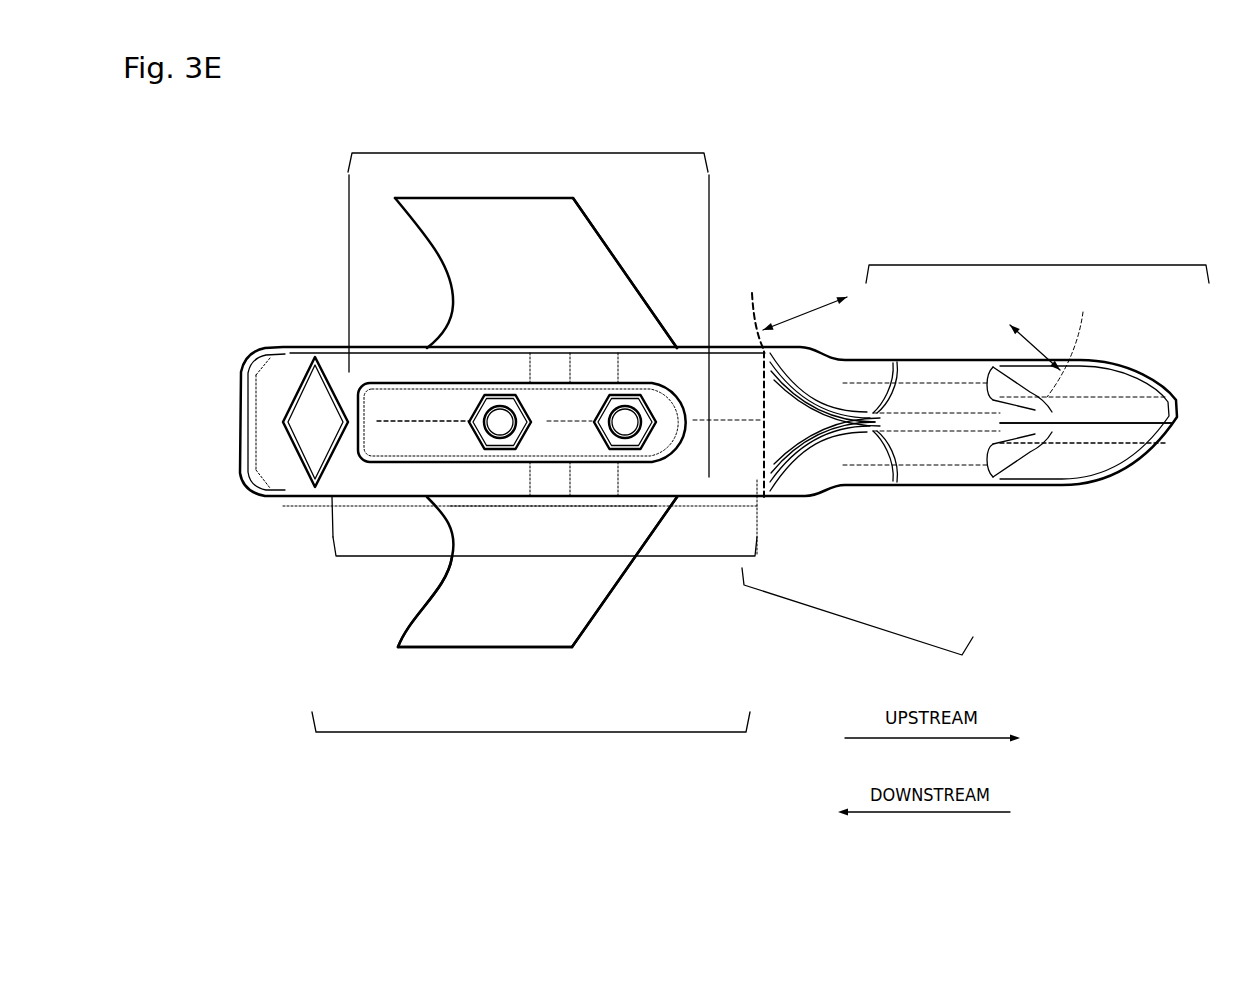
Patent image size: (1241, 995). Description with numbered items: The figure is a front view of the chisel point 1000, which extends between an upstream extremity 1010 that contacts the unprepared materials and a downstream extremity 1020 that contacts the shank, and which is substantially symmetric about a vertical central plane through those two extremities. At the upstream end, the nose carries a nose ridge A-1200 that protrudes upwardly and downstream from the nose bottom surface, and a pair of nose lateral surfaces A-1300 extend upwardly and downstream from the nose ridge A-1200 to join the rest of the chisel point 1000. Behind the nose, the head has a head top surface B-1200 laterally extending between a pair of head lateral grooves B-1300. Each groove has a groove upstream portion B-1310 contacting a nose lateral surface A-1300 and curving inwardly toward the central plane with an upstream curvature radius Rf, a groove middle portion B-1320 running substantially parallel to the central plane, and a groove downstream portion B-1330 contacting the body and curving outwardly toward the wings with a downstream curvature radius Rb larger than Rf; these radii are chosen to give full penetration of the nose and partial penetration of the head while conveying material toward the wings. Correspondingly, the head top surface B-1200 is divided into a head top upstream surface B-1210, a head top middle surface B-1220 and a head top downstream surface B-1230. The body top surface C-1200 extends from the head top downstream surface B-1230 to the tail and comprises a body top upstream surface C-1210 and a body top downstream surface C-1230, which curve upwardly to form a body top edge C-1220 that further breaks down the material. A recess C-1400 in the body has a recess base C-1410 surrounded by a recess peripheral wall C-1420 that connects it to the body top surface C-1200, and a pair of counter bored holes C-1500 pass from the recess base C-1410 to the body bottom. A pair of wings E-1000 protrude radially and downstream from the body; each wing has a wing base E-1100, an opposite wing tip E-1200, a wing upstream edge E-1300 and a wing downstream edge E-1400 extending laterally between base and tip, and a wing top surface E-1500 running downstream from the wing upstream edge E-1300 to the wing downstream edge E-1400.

The chisel point 1000 is at (815, 218).
The upstream extremity 1010 is at (1180, 420).
The downstream extremity 1020 is at (238, 412).
The recess C-1400 is at (493, 152).
The recess base C-1410 is at (410, 435).
The recess peripheral wall C-1420 is at (677, 385).
The pair of counter bored holes C-1500 is at (630, 387).
The body top downstream surface C-1230 is at (493, 485).
The body top upstream surface C-1210 is at (756, 468).
The body top edge C-1220 is at (628, 468).
The body top surface C-1200 is at (353, 560).
The wing base E-1100 is at (567, 497).
The wing top surface E-1500 is at (537, 600).
The wing downstream edge E-1400 is at (410, 625).
The wing tip E-1200 is at (424, 649).
The wing upstream edge E-1300 is at (627, 568).
The pair of wings E-1000 is at (525, 733).
The head top surface B-1200 is at (1015, 263).
The head top downstream surface B-1230 is at (783, 390).
The head top middle surface B-1220 is at (932, 412).
The head top upstream surface B-1210 is at (1030, 413).
The pair of head lateral grooves B-1300 is at (830, 613).
The groove downstream portion B-1330 is at (835, 455).
The groove middle portion B-1320 is at (917, 448).
The groove upstream portion B-1310 is at (985, 453).
The pair of nose lateral surfaces A-1300 is at (1058, 470).
The nose ridge A-1200 is at (1102, 443).
The downstream curvature radius Rb is at (805, 308).
The upstream curvature radius Rf is at (1035, 347).